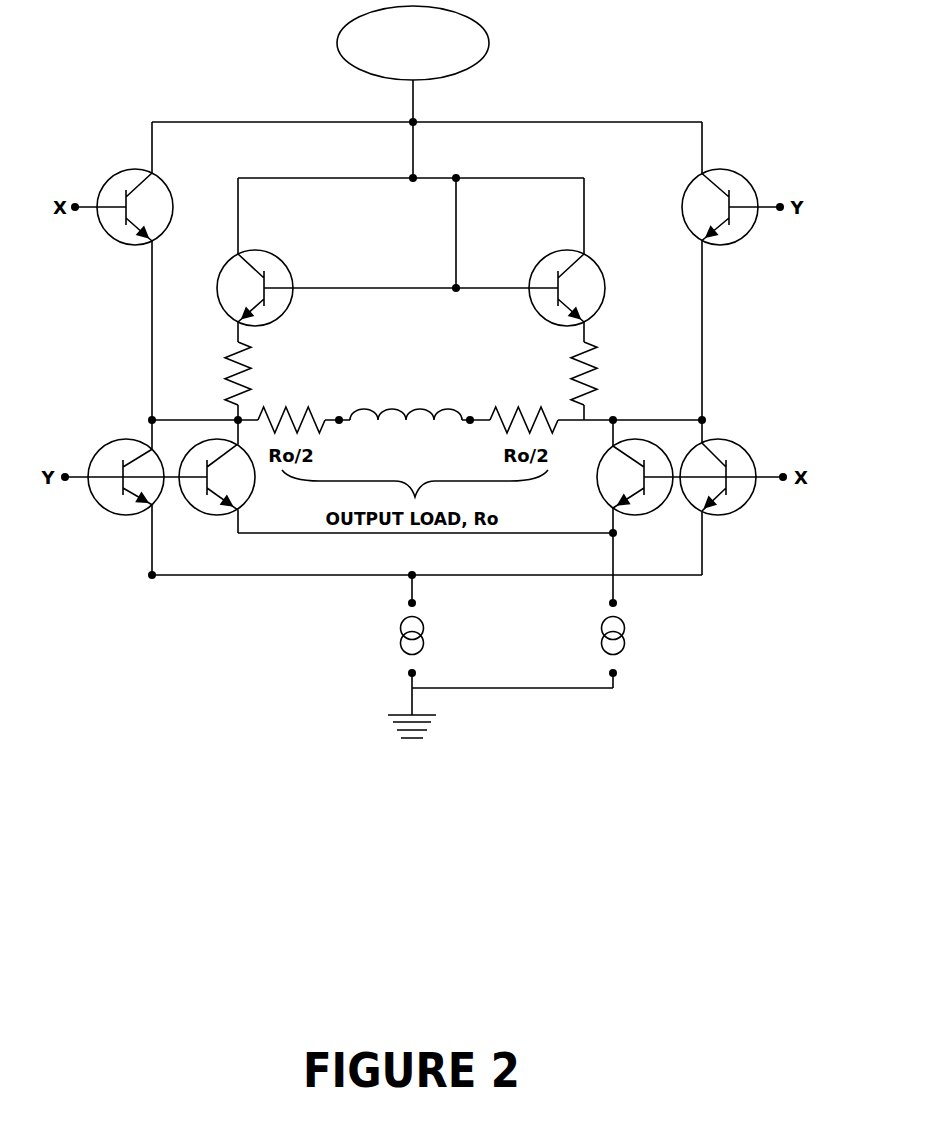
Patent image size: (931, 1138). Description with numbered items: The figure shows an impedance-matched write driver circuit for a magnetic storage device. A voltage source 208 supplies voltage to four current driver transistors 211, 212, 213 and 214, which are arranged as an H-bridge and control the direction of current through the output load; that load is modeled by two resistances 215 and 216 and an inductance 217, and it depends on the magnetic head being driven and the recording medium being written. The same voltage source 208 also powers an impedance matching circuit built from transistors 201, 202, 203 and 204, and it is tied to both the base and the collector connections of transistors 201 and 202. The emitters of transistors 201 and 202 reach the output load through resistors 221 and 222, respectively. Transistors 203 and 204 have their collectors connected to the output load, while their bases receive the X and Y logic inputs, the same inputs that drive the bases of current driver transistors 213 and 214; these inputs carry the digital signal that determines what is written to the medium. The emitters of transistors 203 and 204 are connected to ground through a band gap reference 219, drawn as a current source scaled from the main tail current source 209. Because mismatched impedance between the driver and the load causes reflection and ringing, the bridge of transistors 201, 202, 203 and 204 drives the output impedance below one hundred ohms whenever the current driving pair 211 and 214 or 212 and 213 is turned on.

The voltage source 208 is at (429, 65).
The current driver transistor 211 is at (134, 217).
The current driver transistor 212 is at (689, 217).
The transistor 201 is at (226, 298).
The transistor 202 is at (552, 265).
The current driver transistor 213 is at (120, 455).
The current driver transistor 214 is at (737, 457).
The transistor 203 is at (214, 487).
The transistor 204 is at (604, 487).
The resistor 221 is at (216, 373).
The resistor 222 is at (606, 373).
The resistance 215 is at (291, 397).
The resistance 216 is at (524, 397).
The inductance 217 is at (406, 392).
The current source IW 209 is at (385, 640).
The band gap reference 219 is at (688, 643).